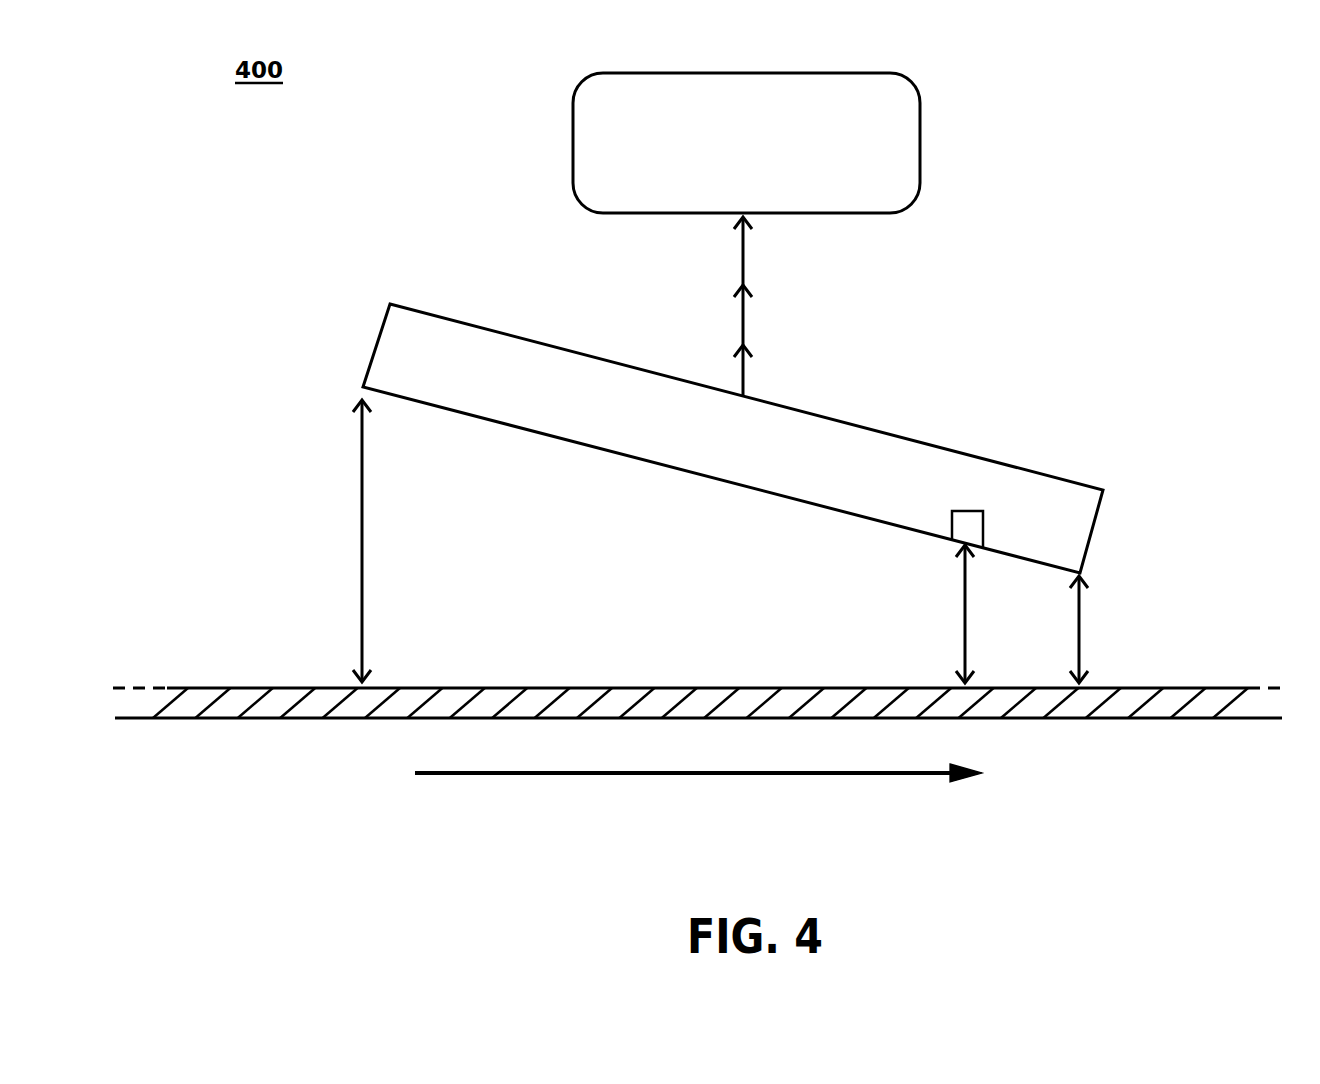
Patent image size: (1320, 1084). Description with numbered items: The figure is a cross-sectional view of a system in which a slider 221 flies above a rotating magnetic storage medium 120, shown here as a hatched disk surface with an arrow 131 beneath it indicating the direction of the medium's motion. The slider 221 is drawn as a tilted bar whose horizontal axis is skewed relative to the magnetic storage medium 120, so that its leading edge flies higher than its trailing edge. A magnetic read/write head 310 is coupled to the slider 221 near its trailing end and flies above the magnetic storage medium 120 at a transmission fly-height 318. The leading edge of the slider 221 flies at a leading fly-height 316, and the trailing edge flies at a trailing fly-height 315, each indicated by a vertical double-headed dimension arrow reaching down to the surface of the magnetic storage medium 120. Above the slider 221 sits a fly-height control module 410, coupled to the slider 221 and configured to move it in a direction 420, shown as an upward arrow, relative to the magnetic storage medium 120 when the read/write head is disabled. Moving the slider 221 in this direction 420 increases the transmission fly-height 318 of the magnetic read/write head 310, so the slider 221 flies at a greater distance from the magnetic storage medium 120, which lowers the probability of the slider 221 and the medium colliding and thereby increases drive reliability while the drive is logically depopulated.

The fly-height control module 410 is at (720, 193).
The direction 420 is at (743, 318).
The slider 221 is at (1098, 517).
The magnetic read/write head 310 is at (967, 528).
The trailing fly-height 315 is at (1079, 622).
The leading fly-height 316 is at (362, 537).
The transmission fly-height 318 is at (965, 624).
The magnetic storage medium 120 is at (1150, 718).
The disk velocity direction 131 is at (728, 776).